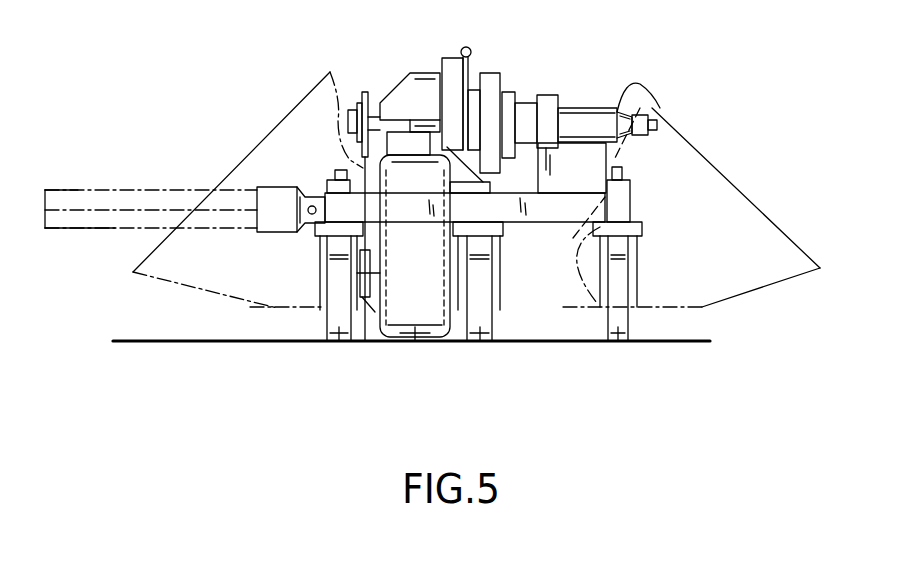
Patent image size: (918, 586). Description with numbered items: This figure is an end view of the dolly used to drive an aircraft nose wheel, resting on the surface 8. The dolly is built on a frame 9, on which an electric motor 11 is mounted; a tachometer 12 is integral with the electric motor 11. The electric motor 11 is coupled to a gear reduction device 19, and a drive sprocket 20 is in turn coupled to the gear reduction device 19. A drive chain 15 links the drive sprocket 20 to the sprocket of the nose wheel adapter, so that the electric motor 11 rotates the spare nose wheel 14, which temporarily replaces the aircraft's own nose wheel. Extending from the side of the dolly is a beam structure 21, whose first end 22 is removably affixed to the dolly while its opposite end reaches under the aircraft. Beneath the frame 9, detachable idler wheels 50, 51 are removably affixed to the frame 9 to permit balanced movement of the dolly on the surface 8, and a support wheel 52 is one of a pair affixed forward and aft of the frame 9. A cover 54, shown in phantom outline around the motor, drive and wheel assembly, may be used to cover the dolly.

The surface 8 is at (128, 338).
The frame 9 is at (583, 205).
The electric motor 11 is at (587, 120).
The tachometer 12 is at (647, 120).
The spare nose wheel 14 is at (413, 345).
The drive chain 15 is at (340, 153).
The gear reduction device 19 is at (422, 72).
The drive sprocket 20 is at (364, 92).
The beam structure 21 is at (86, 200).
The first end 22 is at (277, 218).
The detachable idler wheel 50 is at (335, 345).
The detachable idler wheel 51 is at (620, 342).
The support wheel 52 is at (482, 345).
The cover 54 is at (317, 95).